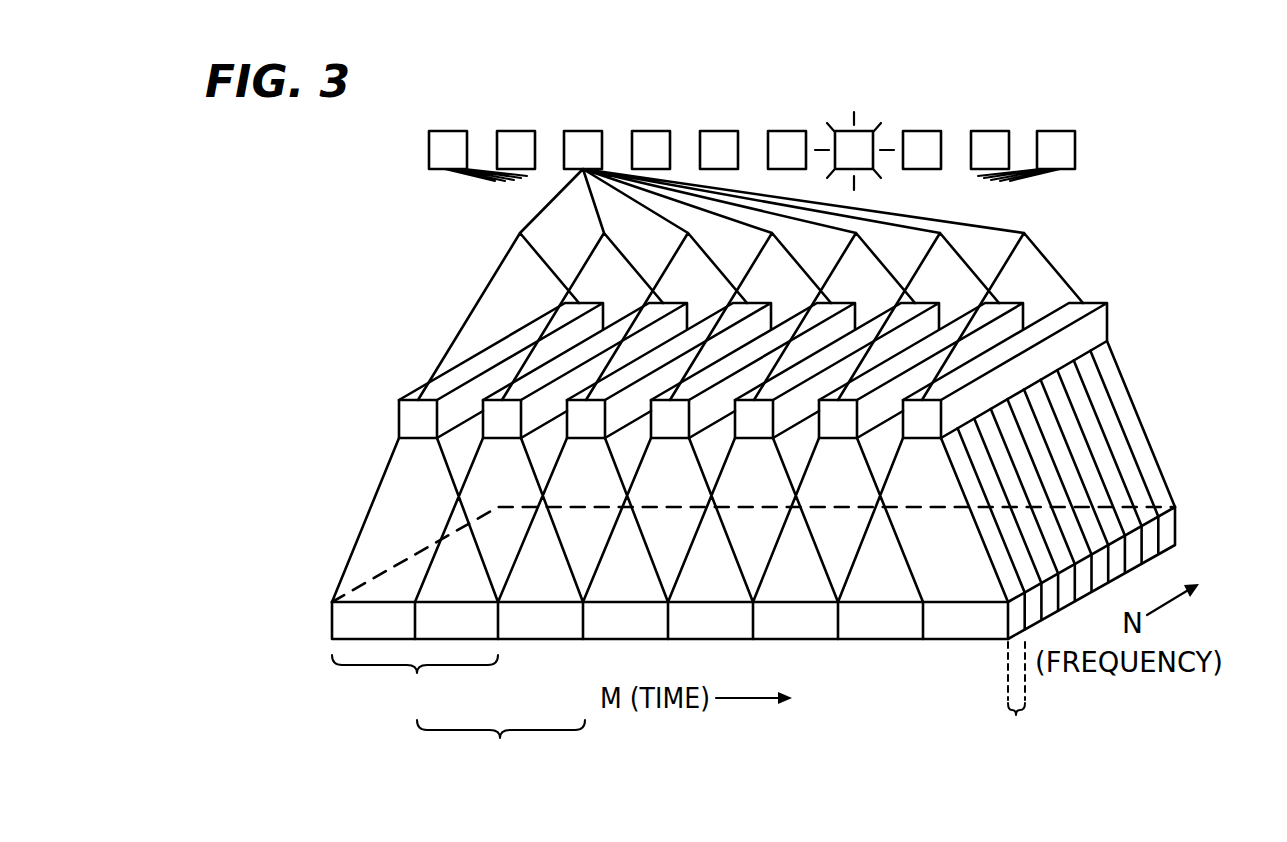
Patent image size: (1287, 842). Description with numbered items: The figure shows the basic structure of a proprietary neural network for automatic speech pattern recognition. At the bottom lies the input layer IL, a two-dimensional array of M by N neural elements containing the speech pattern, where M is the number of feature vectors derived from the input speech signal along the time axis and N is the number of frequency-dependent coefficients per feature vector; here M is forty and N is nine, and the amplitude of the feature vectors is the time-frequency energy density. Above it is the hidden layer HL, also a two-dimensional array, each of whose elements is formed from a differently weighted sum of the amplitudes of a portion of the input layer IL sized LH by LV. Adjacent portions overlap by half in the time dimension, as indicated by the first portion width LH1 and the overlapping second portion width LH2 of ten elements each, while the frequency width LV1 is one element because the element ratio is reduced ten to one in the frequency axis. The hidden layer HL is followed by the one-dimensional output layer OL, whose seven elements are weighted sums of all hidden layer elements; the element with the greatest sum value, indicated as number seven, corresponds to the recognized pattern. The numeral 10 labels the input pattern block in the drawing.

The input pattern (time-frequency spectrogram block) 10 is at (1168, 530).
The output layer OL is at (412, 150).
The hidden layer HL is at (390, 414).
The input layer IL is at (324, 620).
The time-dimension size of first input layer portion LH1 is at (415, 688).
The time-dimension size of second input layer portion LH2 is at (501, 753).
The frequency-dimension size of input layer portion LV1 is at (1041, 701).